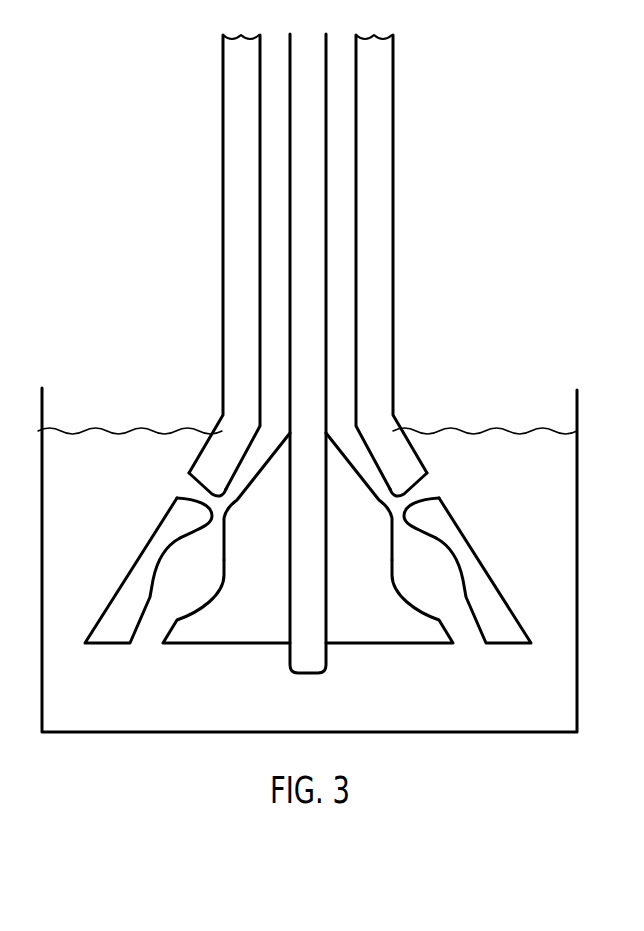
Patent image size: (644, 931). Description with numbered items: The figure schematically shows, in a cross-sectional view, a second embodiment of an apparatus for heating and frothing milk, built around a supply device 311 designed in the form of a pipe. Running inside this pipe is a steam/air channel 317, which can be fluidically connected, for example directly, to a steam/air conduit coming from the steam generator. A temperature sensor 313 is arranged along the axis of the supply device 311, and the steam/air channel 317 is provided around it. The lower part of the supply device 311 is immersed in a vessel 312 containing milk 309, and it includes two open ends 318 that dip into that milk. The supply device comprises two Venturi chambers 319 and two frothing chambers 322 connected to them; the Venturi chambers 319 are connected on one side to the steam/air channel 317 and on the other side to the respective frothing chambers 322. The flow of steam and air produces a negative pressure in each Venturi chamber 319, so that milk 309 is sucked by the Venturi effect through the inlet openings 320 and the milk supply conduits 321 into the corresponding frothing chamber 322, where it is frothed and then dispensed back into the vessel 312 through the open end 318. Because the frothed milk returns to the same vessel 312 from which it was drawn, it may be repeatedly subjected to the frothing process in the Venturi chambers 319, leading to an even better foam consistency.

The milk 309 is at (568, 633).
The supply device 311 is at (393, 147).
The vessel 312 is at (578, 497).
The temperature sensor 313 is at (297, 657).
The steam/air channel 317 is at (343, 90).
The open ends 318 is at (153, 645).
The Venturi chambers 319 is at (227, 512).
The inlet openings 320 is at (183, 487).
The milk supply conduits 321 is at (198, 495).
The frothing chambers 322 is at (163, 588).